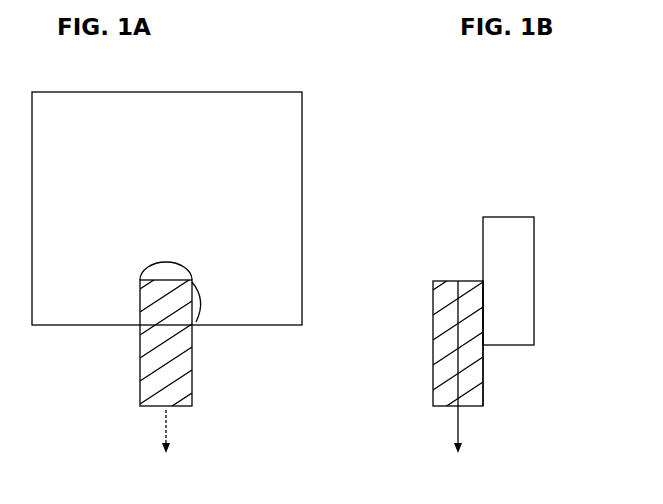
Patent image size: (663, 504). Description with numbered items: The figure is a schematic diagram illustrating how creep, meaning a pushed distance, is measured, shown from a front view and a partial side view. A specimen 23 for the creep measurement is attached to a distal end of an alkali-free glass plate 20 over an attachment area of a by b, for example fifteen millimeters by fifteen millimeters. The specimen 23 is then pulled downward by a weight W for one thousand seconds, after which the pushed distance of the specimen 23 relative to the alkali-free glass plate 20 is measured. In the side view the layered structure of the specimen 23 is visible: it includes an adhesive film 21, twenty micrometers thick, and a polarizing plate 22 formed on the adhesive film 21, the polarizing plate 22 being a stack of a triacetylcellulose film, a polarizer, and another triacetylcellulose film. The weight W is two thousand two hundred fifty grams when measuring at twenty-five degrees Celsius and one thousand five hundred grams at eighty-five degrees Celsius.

In FIG. 1A, the alkali-free glass plate 20 is at (285, 170).
In FIG. 1B, the alkali-free glass plate 20 is at (483, 249).
In FIG. 1B, the adhesive film 21 is at (476, 388).
In FIG. 1B, the polarizing plate 22 is at (446, 383).
In FIG. 1A, the specimen 23 is at (134, 362).
In FIG. 1B, the specimen 23 is at (427, 323).
In FIG. 1A, the attachment area dimension a is at (166, 268).
In FIG. 1A, the attachment area dimension b is at (200, 302).
In FIG. 1A, the weight W is at (167, 445).
In FIG. 1B, the weight W is at (459, 443).